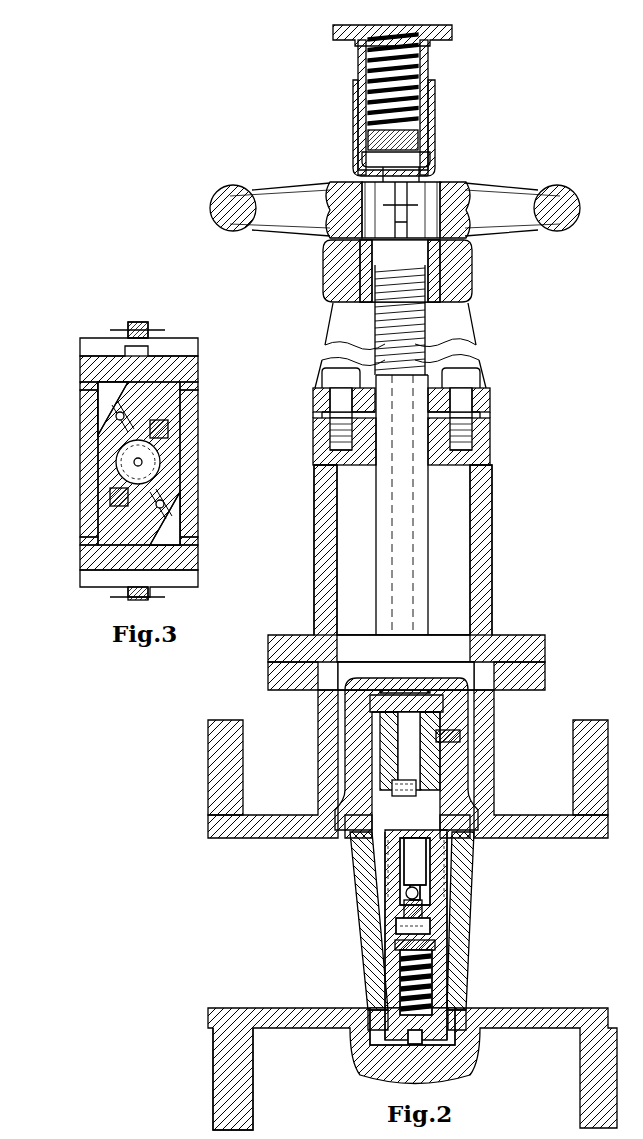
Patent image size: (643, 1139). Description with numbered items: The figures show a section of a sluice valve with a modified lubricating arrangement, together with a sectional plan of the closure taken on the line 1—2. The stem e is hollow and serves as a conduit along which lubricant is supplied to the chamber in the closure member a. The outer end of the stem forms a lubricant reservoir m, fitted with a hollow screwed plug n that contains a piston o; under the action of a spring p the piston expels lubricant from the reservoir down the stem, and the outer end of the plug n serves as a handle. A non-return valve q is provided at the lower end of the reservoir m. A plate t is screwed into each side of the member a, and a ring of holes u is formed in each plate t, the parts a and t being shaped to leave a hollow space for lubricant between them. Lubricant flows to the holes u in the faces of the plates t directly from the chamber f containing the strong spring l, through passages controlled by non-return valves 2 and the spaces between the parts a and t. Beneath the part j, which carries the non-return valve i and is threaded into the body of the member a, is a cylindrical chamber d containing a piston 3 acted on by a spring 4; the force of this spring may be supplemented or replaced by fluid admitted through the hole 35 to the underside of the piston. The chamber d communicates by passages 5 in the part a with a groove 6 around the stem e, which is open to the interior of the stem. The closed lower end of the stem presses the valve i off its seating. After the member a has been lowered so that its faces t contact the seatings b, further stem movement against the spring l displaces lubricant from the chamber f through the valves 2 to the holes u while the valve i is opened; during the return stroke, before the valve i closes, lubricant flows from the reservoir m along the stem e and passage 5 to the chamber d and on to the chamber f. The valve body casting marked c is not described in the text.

In FIG. 2, the hollow screwed plug n is at (430, 66).
In FIG. 2, the spring p is at (368, 70).
In FIG. 2, the piston o is at (368, 132).
In FIG. 2, the lubricant reservoir m is at (432, 160).
In FIG. 2, the non-return valve q is at (365, 228).
In FIG. 2, the stem e is at (432, 556).
In FIG. 2, the seating b is at (500, 832).
In FIG. 2, the lower flange c is at (555, 1012).
In FIG. 2, the holes u is at (350, 826).
In FIG. 3, the holes u is at (188, 384).
In FIG. 2, the section line 1 is at (348, 856).
In FIG. 2, the non-return valves 2 is at (470, 856).
In FIG. 3, the non-return valves 2 is at (162, 430).
In FIG. 2, the cylindrical chamber d is at (428, 935).
In FIG. 2, the strong spring l is at (432, 872).
In FIG. 2, the chamber f is at (395, 877).
In FIG. 3, the chamber f is at (152, 468).
In FIG. 2, the closure member a is at (404, 893).
In FIG. 3, the closure member a is at (178, 362).
In FIG. 2, the non-return valve i is at (440, 892).
In FIG. 2, the valve body j is at (395, 913).
In FIG. 2, the plate t is at (462, 922).
In FIG. 3, the plate t is at (190, 402).
In FIG. 2, the piston 3 is at (396, 957).
In FIG. 2, the spring 4 is at (434, 985).
In FIG. 2, the passages 5 is at (388, 786).
In FIG. 3, the passages 5 is at (115, 440).
In FIG. 2, the groove 6 is at (432, 780).
In FIG. 2, the hole 35 is at (408, 1040).